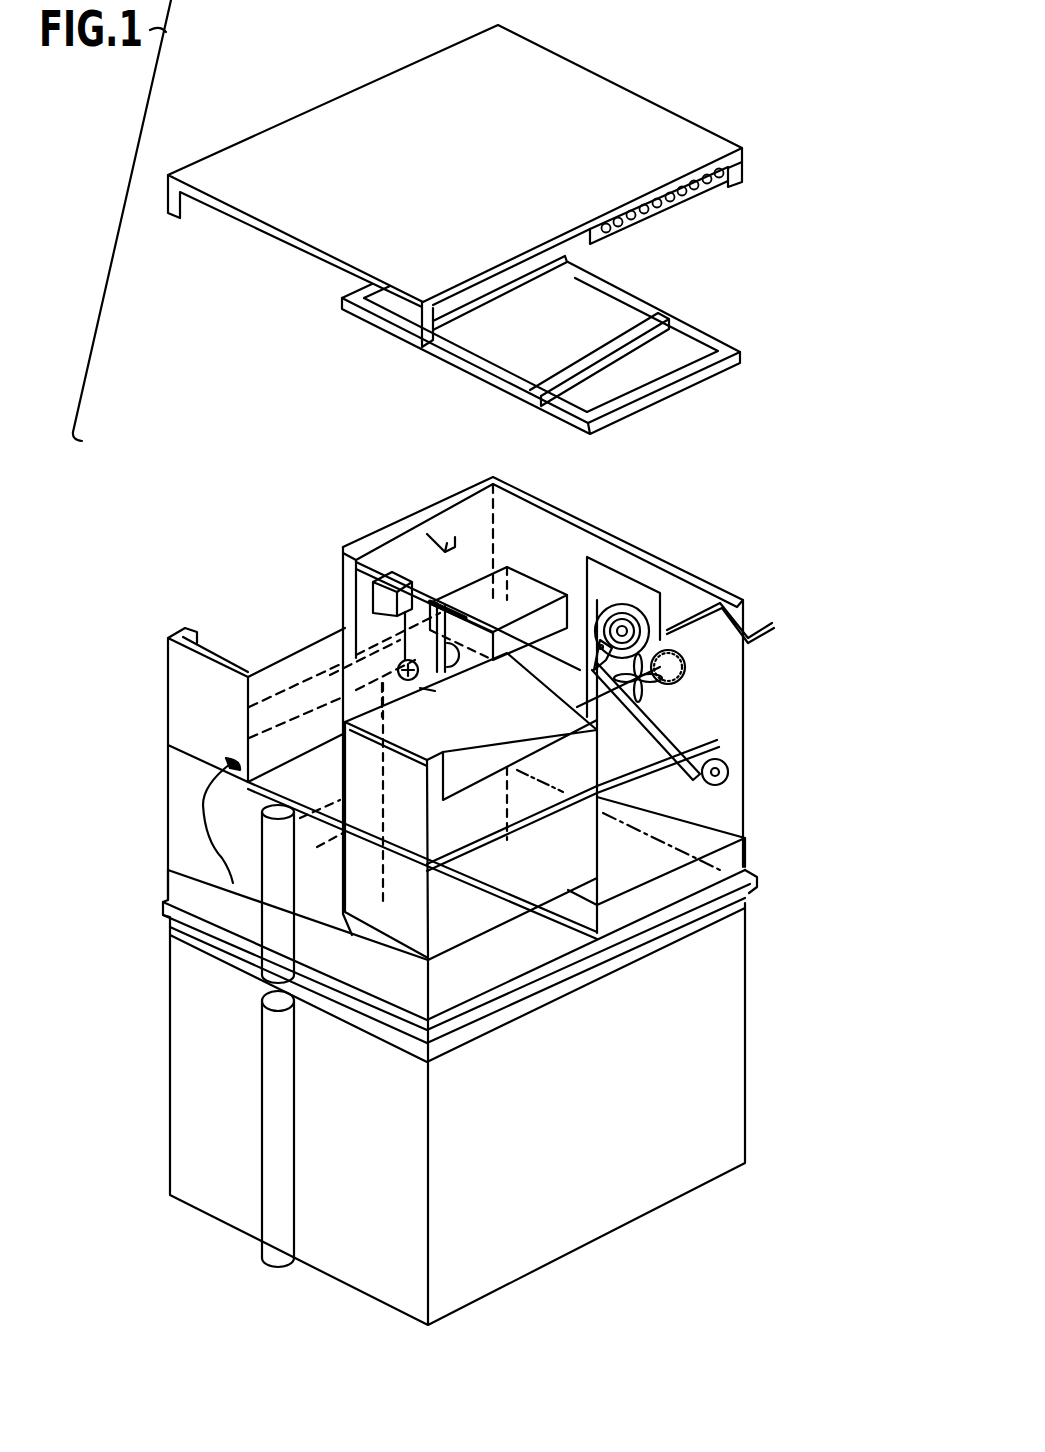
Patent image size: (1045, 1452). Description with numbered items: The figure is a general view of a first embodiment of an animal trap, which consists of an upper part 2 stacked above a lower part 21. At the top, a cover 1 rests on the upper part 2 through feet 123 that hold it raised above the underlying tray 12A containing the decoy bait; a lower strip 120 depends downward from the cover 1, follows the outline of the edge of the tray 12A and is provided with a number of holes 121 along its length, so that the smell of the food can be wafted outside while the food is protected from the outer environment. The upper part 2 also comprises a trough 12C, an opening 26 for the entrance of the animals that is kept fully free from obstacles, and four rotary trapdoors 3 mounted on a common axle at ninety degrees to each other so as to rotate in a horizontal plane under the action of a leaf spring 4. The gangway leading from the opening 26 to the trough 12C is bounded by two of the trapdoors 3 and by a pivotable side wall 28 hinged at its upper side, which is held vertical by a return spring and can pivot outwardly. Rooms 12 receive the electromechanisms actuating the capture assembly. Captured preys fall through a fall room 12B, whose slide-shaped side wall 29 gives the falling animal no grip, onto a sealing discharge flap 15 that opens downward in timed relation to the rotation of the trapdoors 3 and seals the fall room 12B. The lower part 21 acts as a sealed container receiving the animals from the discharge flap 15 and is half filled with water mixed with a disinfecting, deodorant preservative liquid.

The cover 1 is at (492, 186).
The lower strip 120 is at (707, 185).
The holes 121 is at (607, 232).
The feet 123 is at (745, 165).
The tray 12A is at (502, 358).
The upper part 2 is at (303, 562).
The pivotable side wall 28 is at (261, 723).
The rooms 12 is at (530, 548).
The trough 12C is at (533, 593).
The leaf spring 4 is at (637, 603).
The rotary trapdoors 3 is at (372, 878).
The opening 26 is at (263, 785).
The side wall 29 is at (215, 822).
The fall room 12B is at (357, 933).
The sealing discharge flap 15 is at (490, 903).
The lower part 21 is at (202, 1013).